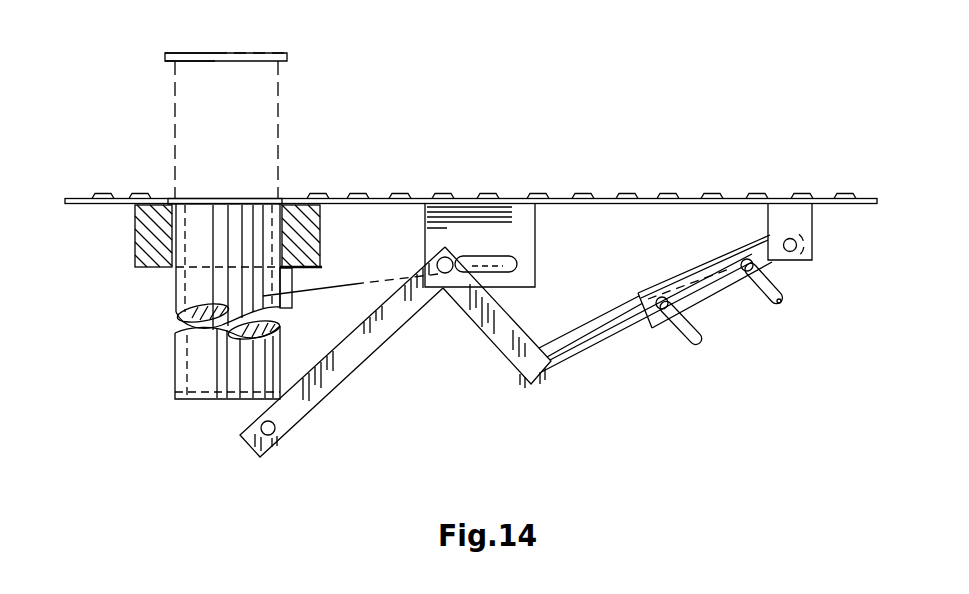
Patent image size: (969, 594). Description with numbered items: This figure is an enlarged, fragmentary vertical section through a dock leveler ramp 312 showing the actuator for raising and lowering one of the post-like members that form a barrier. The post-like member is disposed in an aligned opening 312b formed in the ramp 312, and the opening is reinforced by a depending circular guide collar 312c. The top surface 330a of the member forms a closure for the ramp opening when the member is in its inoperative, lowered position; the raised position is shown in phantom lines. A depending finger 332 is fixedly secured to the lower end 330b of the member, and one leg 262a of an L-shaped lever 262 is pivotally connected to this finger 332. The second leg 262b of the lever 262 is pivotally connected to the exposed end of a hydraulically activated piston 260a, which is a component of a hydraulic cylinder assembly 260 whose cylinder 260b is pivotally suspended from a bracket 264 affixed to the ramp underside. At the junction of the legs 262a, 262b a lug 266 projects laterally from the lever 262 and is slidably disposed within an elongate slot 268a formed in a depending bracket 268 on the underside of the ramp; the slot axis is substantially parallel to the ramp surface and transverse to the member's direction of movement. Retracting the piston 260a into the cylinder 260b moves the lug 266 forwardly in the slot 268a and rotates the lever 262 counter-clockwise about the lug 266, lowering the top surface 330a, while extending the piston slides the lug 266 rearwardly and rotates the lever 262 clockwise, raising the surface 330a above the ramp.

The ramp 312 is at (612, 190).
The aligned opening 312b is at (287, 197).
The depending circular guide collar 312c is at (322, 233).
The top surface 330a is at (193, 199).
The lower end 330b is at (194, 399).
The depending finger 332 is at (290, 440).
The L-shaped lever 262 is at (407, 363).
The leg of L-shaped lever 262a is at (330, 414).
The second leg of L-shaped lever 262b is at (507, 348).
The lug 266 is at (440, 254).
The depending bracket 268 is at (491, 192).
The elongate slot 268a is at (473, 261).
The bracket 264 is at (804, 217).
The hydraulic cylinder assembly 260 is at (688, 277).
The hydraulically activated piston 260a is at (608, 330).
The cylinder 260b is at (716, 266).